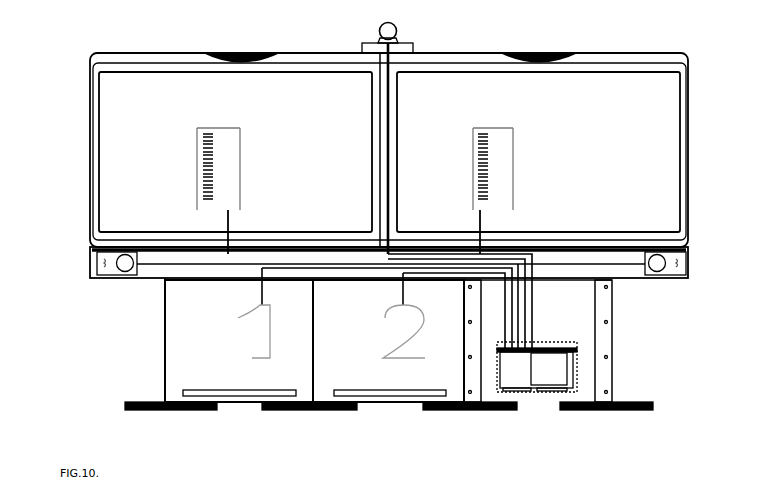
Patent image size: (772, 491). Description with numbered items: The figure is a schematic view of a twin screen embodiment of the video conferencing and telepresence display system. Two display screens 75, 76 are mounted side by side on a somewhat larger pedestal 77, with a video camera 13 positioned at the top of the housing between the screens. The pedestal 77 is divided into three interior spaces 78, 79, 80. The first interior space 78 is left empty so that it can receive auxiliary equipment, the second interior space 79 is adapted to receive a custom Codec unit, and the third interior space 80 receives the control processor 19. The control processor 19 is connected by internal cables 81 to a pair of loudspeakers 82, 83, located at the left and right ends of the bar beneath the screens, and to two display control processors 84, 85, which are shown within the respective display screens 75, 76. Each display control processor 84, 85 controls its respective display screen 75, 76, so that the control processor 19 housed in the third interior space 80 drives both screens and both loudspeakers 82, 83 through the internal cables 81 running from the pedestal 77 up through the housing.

The video camera 13 is at (397, 33).
The first display screen 75 is at (120, 105).
The second display screen 76 is at (665, 177).
The first display control processor 84 is at (227, 172).
The second display control processor 85 is at (500, 150).
The first loudspeaker 82 is at (97, 266).
The second loudspeaker 83 is at (688, 268).
The internal cables 81 is at (533, 322).
The pedestal 77 is at (165, 323).
The first interior space 78 is at (190, 358).
The second interior space 79 is at (376, 380).
The third interior space 80 is at (580, 320).
The control processor 19 is at (567, 368).